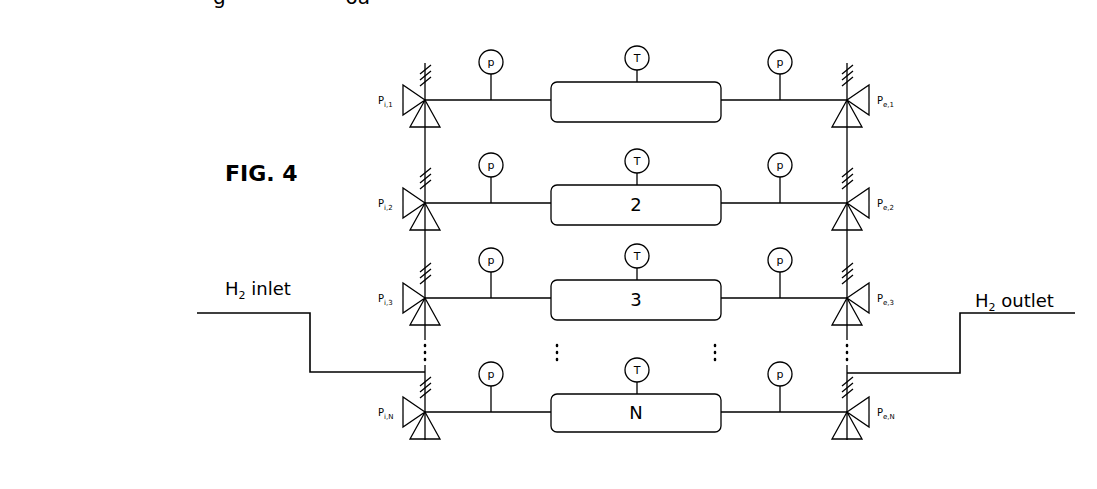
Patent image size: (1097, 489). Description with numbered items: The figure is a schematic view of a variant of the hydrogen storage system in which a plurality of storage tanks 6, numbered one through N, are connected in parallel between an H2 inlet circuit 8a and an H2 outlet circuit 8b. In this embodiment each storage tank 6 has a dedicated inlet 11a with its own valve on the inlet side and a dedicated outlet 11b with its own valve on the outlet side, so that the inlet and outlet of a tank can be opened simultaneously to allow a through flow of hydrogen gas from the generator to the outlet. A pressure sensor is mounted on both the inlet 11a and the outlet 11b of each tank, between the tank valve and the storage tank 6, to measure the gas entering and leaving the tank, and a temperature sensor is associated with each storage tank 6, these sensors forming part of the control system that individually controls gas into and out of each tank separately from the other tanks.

The inlet 11a is at (523, 100).
The outlet 11b is at (745, 100).
The storage tank 6 is at (678, 75).
The H2 inlet circuit 8a is at (330, 395).
The H2 outlet circuit 8b is at (930, 393).